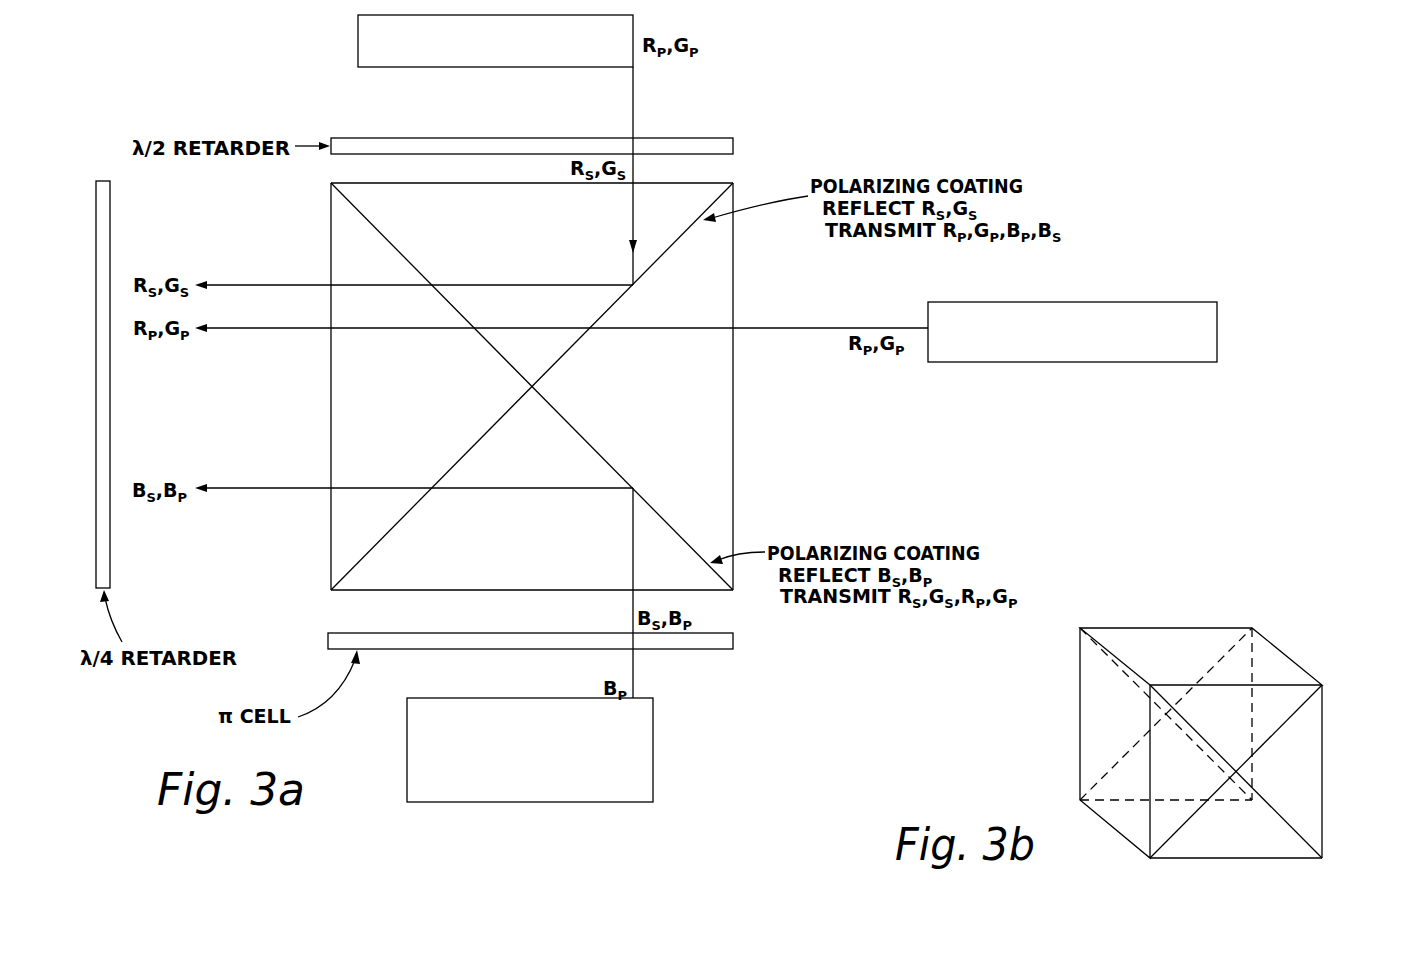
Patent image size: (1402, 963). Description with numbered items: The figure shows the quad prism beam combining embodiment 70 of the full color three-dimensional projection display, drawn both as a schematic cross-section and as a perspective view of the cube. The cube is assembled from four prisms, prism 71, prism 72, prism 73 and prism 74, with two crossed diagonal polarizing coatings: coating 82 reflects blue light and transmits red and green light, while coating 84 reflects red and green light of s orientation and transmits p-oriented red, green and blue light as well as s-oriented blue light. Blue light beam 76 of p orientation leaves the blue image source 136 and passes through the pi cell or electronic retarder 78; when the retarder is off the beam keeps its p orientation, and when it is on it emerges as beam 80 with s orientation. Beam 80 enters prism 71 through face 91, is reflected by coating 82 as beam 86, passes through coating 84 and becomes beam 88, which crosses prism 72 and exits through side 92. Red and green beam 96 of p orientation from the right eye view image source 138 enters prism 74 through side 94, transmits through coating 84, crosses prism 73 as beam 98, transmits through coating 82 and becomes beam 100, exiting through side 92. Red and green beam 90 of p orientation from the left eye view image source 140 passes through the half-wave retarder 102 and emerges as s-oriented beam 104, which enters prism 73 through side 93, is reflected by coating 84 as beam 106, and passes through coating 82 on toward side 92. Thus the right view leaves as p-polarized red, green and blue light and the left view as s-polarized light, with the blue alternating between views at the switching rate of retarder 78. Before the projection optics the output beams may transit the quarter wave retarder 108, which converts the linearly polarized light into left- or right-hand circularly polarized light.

In FIG. 3A, the beam combining embodiment 70 is at (878, 94).
In FIG. 3A, the prism 71 is at (500, 540).
In FIG. 3B, the prism 71 is at (1222, 834).
In FIG. 3A, the prism 72 is at (402, 400).
In FIG. 3B, the prism 72 is at (1170, 785).
In FIG. 3A, the prism 73 is at (535, 234).
In FIG. 3B, the prism 73 is at (1220, 729).
In FIG. 3A, the prism 74 is at (647, 392).
In FIG. 3B, the prism 74 is at (1274, 785).
In FIG. 3A, the blue light beam 76 is at (635, 677).
In FIG. 3A, the pi cell or electronic retarder 78 is at (733, 643).
In FIG. 3A, the beam 80 is at (633, 556).
In FIG. 3A, the polarizing coating 82 is at (380, 234).
In FIG. 3B, the polarizing coating 82 is at (1207, 748).
In FIG. 3A, the polarizing coating 84 is at (666, 251).
In FIG. 3B, the polarizing coating 84 is at (1200, 680).
In FIG. 3A, the beam 86 is at (484, 489).
In FIG. 3A, the blue light beam 88 is at (281, 489).
In FIG. 3A, the red and green beam 90 is at (633, 101).
In FIG. 3A, the face 91 is at (378, 591).
In FIG. 3B, the face 91 is at (1253, 849).
In FIG. 3A, the side 92 is at (331, 405).
In FIG. 3B, the side 92 is at (1090, 723).
In FIG. 3A, the side 93 is at (331, 183).
In FIG. 3B, the side 93 is at (1207, 650).
In FIG. 3A, the side 94 is at (733, 293).
In FIG. 3B, the side 94 is at (1308, 754).
In FIG. 3A, the red and green light beam 96 is at (660, 330).
In FIG. 3A, the beam 98 is at (500, 329).
In FIG. 3A, the beam 100 is at (280, 329).
In FIG. 3A, the half-wave retarder 102 is at (733, 146).
In FIG. 3A, the beam 104 is at (636, 172).
In FIG. 3A, the beam 106 is at (515, 285).
In FIG. 3A, the quarter wave retarder 108 is at (110, 181).
In FIG. 3A, the image source 136 is at (653, 743).
In FIG. 3A, the right eye view image source 138 is at (1145, 302).
In FIG. 3A, the left eye view image source 140 is at (358, 38).